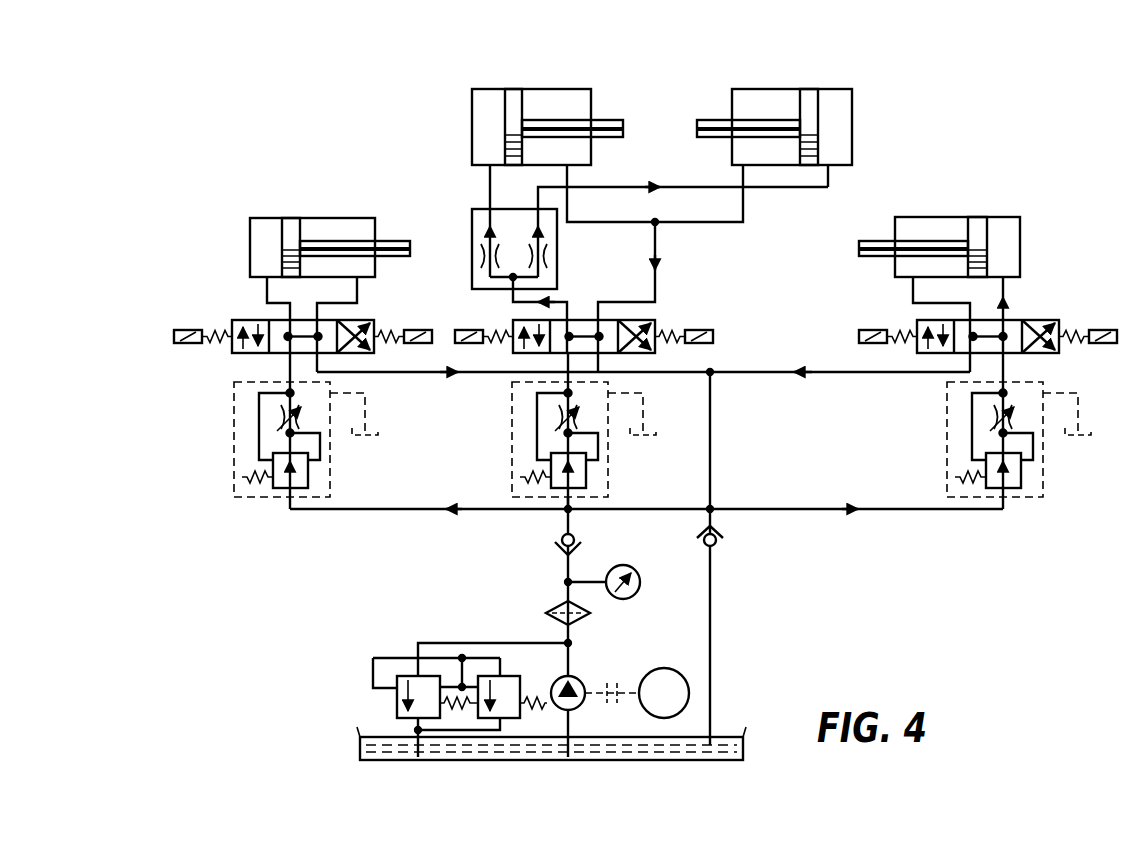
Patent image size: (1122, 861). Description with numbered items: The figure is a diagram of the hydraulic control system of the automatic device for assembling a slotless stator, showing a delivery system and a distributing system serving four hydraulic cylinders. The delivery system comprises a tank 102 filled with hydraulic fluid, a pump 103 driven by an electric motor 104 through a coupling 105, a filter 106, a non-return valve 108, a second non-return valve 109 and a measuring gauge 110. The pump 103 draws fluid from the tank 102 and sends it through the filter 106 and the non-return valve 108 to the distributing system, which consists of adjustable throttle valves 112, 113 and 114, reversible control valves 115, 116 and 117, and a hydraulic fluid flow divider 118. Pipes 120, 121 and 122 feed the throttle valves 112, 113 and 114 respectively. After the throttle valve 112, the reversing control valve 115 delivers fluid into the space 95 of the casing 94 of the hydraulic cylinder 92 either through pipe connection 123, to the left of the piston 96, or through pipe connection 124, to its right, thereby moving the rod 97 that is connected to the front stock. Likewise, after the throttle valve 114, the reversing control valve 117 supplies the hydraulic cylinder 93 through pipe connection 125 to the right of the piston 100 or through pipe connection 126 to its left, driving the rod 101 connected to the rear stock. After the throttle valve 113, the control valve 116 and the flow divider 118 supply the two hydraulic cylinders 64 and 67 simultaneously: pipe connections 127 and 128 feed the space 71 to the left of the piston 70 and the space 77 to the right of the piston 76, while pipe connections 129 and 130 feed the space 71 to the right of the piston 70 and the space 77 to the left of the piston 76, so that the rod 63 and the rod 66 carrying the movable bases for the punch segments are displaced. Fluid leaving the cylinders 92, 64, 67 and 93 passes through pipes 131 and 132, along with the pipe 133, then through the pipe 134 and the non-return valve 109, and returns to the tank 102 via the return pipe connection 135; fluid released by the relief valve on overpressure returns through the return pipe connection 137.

The rod 63 is at (611, 138).
The hydraulic cylinder 64 is at (550, 108).
The rod 66 is at (722, 131).
The hydraulic cylinder 67 is at (774, 101).
The piston 70 is at (514, 93).
The space for hydraulic fluid 71 is at (593, 102).
The piston 76 is at (808, 95).
The space for hydraulic fluid 77 is at (748, 95).
The hydraulic cylinder 92 is at (326, 216).
The hydraulic cylinder 93 is at (945, 223).
The casing 94 is at (929, 225).
The space for hydraulic fluid 95 is at (343, 227).
The piston 96 is at (293, 222).
The rod 97 is at (387, 245).
The piston 100 is at (983, 230).
The rod 101 is at (868, 238).
The tank 102 is at (745, 750).
The pump 103 is at (578, 673).
The electric motor 104 is at (670, 668).
The coupling 105 is at (614, 702).
The filter 106 is at (553, 603).
The non-return valve 108 is at (580, 532).
The non-return valve 109 is at (722, 541).
The measuring gauge 110 is at (638, 573).
The adjustable throttle valve 112 is at (333, 456).
The adjustable throttle valve 113 is at (609, 464).
The adjustable throttle valve 114 is at (1046, 448).
The reversible control valve 115 is at (237, 361).
The reversible control valve 116 is at (524, 361).
The reversible control valve 117 is at (939, 355).
The hydraulic fluid flow divider 118 is at (558, 270).
The pipe 120 is at (472, 507).
The pipe 121 is at (563, 505).
The pipe 122 is at (777, 508).
The pipe connection 123 is at (267, 292).
The pipe connection 124 is at (358, 293).
The pipe connection 125 is at (1007, 288).
The pipe connection 126 is at (912, 290).
The pipe connection 127 is at (488, 193).
The pipe connection 128 is at (828, 181).
The pipe connection 129 is at (572, 208).
The pipe connection 130 is at (745, 208).
The pipe 131 is at (422, 375).
The pipe 132 is at (600, 358).
The return line 133 is at (743, 371).
The pipe 134 is at (713, 437).
The return pipe connection 135 is at (712, 692).
The return pipe connection 137 is at (420, 758).